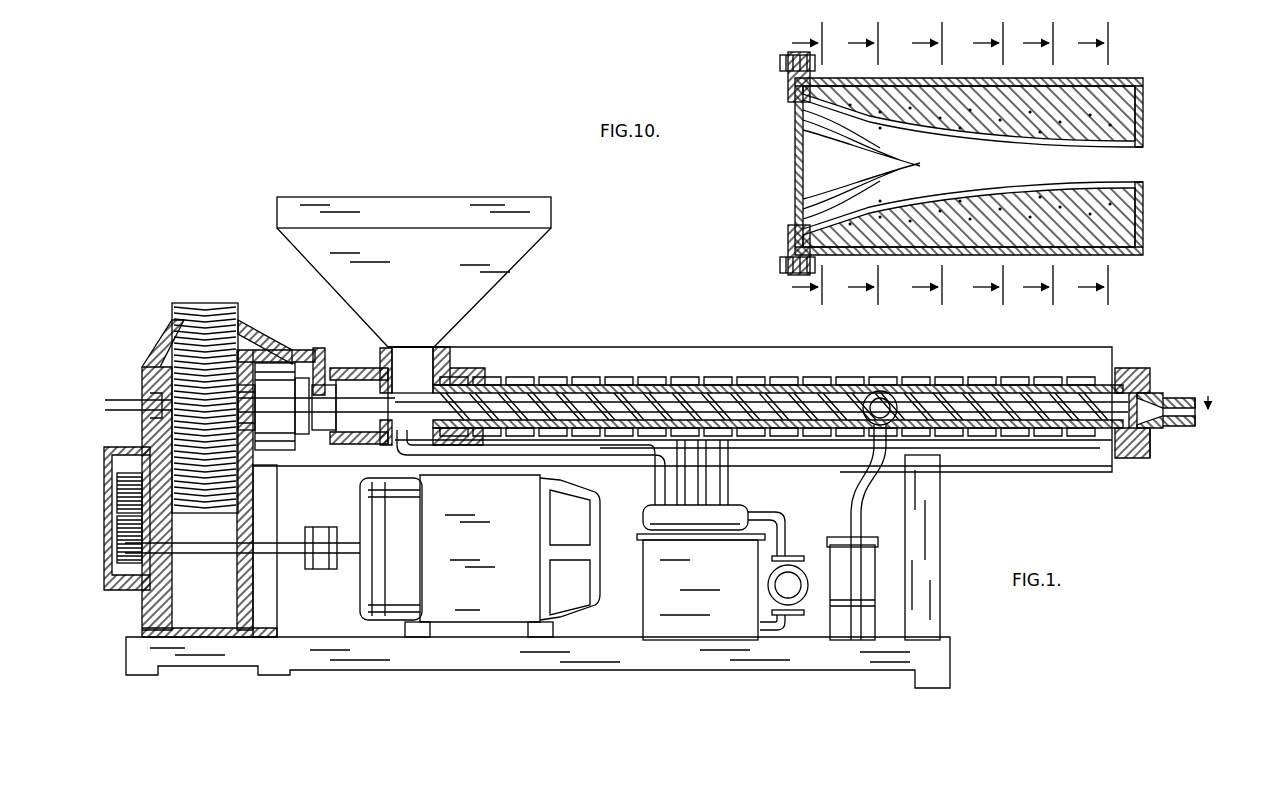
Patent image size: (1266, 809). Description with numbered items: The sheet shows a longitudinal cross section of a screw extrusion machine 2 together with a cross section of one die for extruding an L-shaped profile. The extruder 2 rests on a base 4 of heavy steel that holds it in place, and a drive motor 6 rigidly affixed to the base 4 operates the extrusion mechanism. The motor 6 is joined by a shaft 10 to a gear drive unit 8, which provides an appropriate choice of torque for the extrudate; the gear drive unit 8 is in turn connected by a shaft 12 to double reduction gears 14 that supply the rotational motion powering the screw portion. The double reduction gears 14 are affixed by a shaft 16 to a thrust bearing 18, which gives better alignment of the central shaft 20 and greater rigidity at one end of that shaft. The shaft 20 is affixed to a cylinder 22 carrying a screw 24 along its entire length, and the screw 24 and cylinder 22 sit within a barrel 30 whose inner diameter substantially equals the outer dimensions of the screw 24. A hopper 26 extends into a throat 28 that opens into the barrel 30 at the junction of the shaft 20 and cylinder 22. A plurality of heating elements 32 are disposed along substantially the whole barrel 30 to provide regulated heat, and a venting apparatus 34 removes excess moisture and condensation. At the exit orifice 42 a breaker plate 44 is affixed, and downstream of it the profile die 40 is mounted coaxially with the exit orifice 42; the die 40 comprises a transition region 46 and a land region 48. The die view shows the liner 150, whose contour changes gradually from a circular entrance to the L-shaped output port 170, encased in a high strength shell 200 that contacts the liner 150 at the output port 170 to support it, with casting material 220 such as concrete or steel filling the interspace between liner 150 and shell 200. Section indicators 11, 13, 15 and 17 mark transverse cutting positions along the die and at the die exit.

In FIG. 1, the screw extrusion machine 2 is at (231, 257).
In FIG. 1, the base 4 is at (208, 660).
In FIG. 1, the drive motor 6 is at (480, 634).
In FIG. 1, the gear drive unit 8 is at (108, 520).
In FIG. 1, the shaft 10 is at (207, 555).
In FIG. 1, the shaft 12 is at (116, 483).
In FIG. 10, the shaft 12 is at (863, 166).
In FIG. 1, the double reduction gears 14 is at (186, 339).
In FIG. 10, the double reduction gears 14 is at (988, 166).
In FIG. 1, the shaft 16 is at (243, 388).
In FIG. 10, the shaft 16 is at (1093, 166).
In FIG. 1, the thrust bearing 18 is at (282, 372).
In FIG. 1, the central shaft 20 is at (348, 392).
In FIG. 1, the cylinder 22 is at (403, 405).
In FIG. 1, the screw 24 is at (496, 388).
In FIG. 1, the hopper 26 is at (418, 210).
In FIG. 1, the throat 28 is at (412, 343).
In FIG. 1, the barrel 30 is at (574, 386).
In FIG. 1, the heating elements 32 is at (656, 488).
In FIG. 1, the venting apparatus 34 is at (850, 517).
In FIG. 1, the profile die 40 is at (1151, 406).
In FIG. 1, the exit orifice 42 is at (1160, 433).
In FIG. 1, the breaker plate 44 is at (1135, 368).
In FIG. 1, the transition region 46 is at (1175, 395).
In FIG. 1, the land region 48 is at (1193, 420).
In FIG. 1, the section line 17 is at (1221, 406).
In FIG. 10, the section line 11- 11 is at (807, 166).
In FIG. 10, the section line 13- 13 is at (927, 166).
In FIG. 10, the section line 15- 15 is at (1038, 166).
In FIG. 10, the liner 150 is at (812, 188).
In FIG. 10, the output port 170 is at (1122, 166).
In FIG. 10, the shell 200 is at (1108, 80).
In FIG. 10, the material 220 is at (1110, 230).